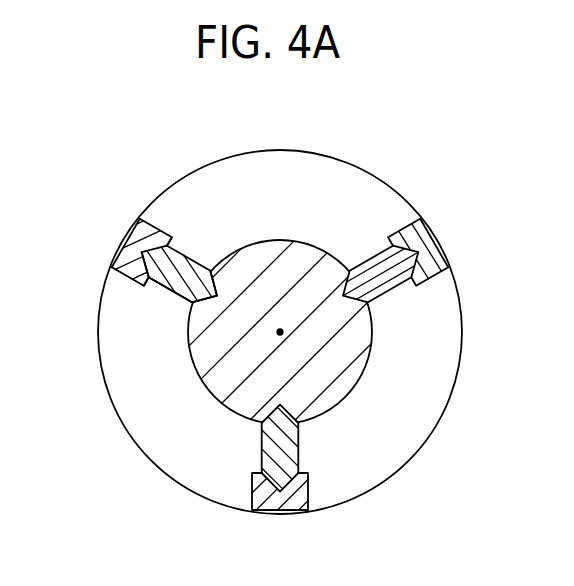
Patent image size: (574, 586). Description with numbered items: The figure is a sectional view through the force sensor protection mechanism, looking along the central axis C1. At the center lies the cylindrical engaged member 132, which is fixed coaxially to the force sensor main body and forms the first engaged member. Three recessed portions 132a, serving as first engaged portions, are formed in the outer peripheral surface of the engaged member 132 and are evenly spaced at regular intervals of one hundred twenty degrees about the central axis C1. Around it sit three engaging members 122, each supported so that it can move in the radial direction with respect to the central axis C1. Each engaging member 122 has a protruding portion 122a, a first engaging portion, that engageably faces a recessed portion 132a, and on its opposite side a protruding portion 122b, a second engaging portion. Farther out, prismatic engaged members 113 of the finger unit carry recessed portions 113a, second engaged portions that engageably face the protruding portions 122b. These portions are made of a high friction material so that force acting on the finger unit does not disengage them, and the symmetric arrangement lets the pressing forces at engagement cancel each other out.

The engaged member 113 is at (437, 260).
The recessed portion 113a is at (148, 238).
The engaging member 122 is at (402, 281).
The protruding portion 122a is at (198, 283).
The protruding portion 122b is at (142, 262).
The engaged member 132 is at (343, 378).
The recessed portion 132a is at (208, 276).
The central axis C1 is at (280, 329).